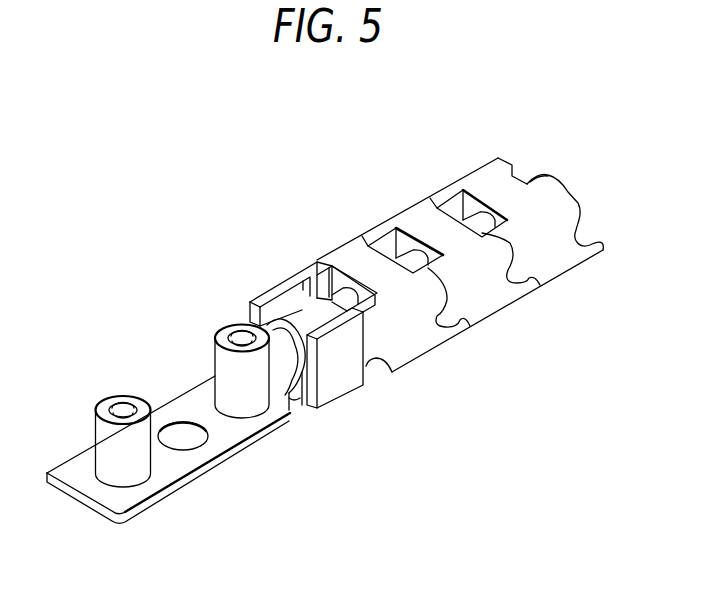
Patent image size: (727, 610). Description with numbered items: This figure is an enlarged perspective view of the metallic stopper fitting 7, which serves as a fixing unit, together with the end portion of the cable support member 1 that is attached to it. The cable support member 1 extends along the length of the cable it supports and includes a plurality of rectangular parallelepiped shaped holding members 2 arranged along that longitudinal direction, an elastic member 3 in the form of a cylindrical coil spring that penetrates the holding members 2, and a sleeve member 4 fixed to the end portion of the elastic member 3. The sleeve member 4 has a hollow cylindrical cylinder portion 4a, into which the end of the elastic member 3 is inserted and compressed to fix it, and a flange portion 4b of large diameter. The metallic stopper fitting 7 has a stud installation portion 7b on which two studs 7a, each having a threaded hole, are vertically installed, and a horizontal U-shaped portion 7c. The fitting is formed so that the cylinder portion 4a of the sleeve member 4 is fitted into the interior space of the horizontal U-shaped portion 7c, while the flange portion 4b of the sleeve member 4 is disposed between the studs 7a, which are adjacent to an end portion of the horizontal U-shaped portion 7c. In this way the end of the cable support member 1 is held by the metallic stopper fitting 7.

The cable support member 1 is at (399, 206).
The holding member 2 is at (468, 176).
The elastic member 3 is at (538, 176).
The sleeve member 4 is at (295, 317).
The cylinder portion 4a is at (330, 303).
The flange portion 4b is at (284, 378).
The metallic stopper fitting 7 is at (162, 512).
The stud 7a is at (103, 396).
The stud installation portion 7b is at (203, 474).
The horizontal U-shaped portion 7c is at (339, 380).